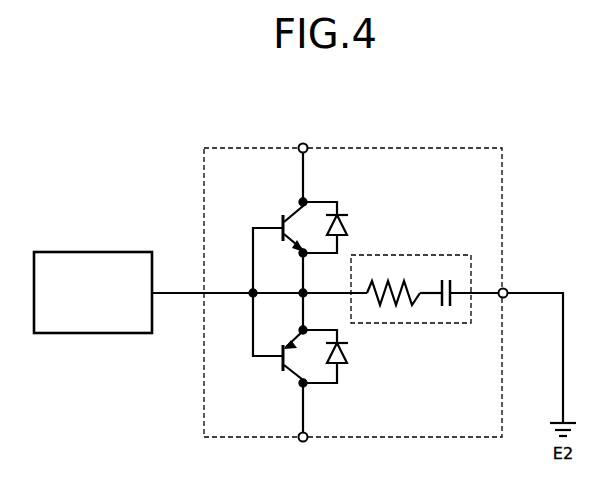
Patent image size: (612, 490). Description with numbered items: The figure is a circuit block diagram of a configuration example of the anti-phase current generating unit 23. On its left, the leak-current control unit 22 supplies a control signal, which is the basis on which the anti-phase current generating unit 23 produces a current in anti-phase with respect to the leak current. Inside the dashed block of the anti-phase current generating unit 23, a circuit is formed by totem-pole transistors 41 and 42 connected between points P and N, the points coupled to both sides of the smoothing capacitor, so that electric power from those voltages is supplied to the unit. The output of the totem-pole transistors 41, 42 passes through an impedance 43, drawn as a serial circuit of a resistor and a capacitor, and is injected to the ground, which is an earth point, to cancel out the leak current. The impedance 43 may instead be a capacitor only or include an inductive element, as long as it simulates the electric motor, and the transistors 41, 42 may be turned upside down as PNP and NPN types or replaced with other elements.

The leak-current control unit 22 is at (104, 251).
The anti-phase current generating unit 23 is at (431, 146).
The transistor 41 is at (286, 216).
The transistor 42 is at (284, 369).
The impedance 43 is at (431, 253).